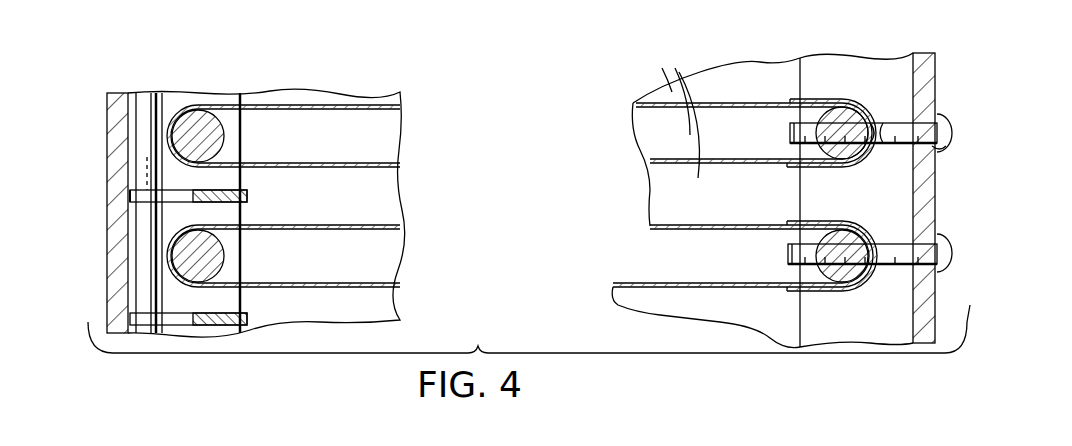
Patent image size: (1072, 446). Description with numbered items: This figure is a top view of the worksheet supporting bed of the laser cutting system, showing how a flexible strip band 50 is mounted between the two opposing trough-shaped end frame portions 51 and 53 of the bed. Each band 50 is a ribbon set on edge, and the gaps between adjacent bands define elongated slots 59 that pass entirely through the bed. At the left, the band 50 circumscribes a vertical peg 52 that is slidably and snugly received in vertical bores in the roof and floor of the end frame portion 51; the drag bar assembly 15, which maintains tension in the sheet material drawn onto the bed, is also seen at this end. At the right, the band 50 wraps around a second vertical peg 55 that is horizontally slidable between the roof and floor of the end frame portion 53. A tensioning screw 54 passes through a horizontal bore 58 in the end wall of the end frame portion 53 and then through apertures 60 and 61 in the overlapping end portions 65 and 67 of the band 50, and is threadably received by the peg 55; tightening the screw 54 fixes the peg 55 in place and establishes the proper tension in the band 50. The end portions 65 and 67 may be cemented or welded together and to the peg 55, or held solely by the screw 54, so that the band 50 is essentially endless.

The drag bar assembly 15 is at (254, 196).
The flexible strip band 50 is at (765, 102).
The end frame portion 51 is at (107, 122).
The vertical peg 52 is at (223, 133).
The end frame portion 53 is at (936, 62).
The tensioning screw 54 is at (951, 121).
The vertical peg 55 is at (845, 118).
The horizontal bore 58 is at (934, 143).
The elongated slot 59 is at (672, 111).
The aperture 60 is at (882, 126).
The aperture 61 is at (878, 146).
The end portion 65 is at (800, 150).
The end portion 67 is at (806, 103).